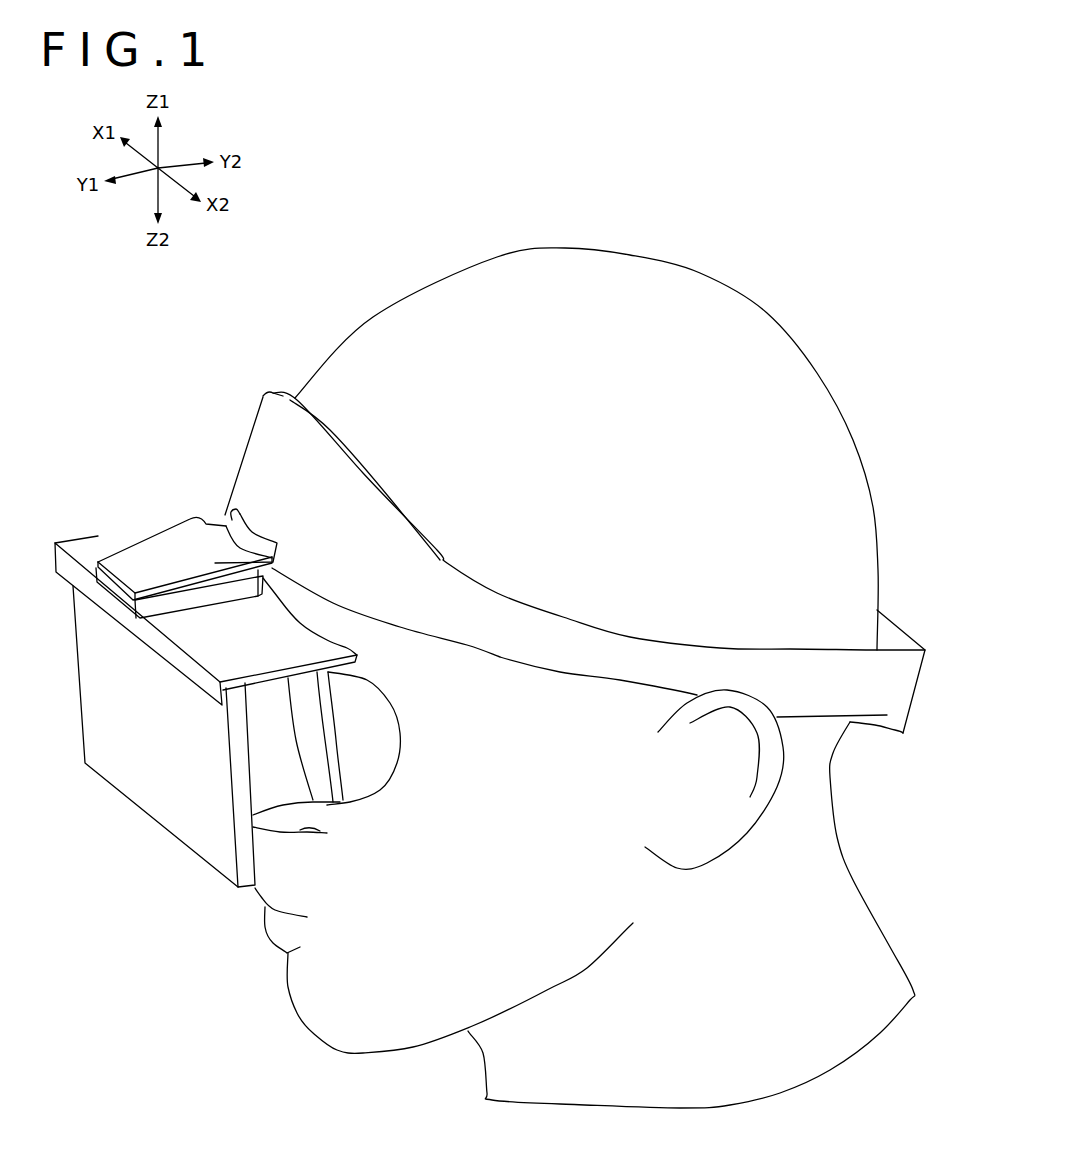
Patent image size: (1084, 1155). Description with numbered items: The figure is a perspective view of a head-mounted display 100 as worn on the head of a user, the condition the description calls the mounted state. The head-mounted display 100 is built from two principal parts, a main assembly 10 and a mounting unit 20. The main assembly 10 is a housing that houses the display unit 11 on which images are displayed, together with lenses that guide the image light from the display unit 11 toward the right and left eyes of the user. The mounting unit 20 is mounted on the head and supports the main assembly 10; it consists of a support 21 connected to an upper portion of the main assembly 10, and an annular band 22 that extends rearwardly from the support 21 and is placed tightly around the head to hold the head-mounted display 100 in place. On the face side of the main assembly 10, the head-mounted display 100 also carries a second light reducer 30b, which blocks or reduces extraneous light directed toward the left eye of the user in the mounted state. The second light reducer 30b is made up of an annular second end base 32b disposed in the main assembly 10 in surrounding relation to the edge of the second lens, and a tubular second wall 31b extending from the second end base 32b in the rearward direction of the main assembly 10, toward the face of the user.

The head-mounted display 100 is at (152, 408).
The main assembly 10 is at (70, 528).
The display unit 11 is at (162, 745).
The mounting unit 20 is at (927, 680).
The support 21 is at (173, 548).
The annular band 22 is at (798, 655).
The second light reducer 30b is at (402, 777).
The second wall 31b is at (363, 780).
The second end base 32b is at (336, 800).